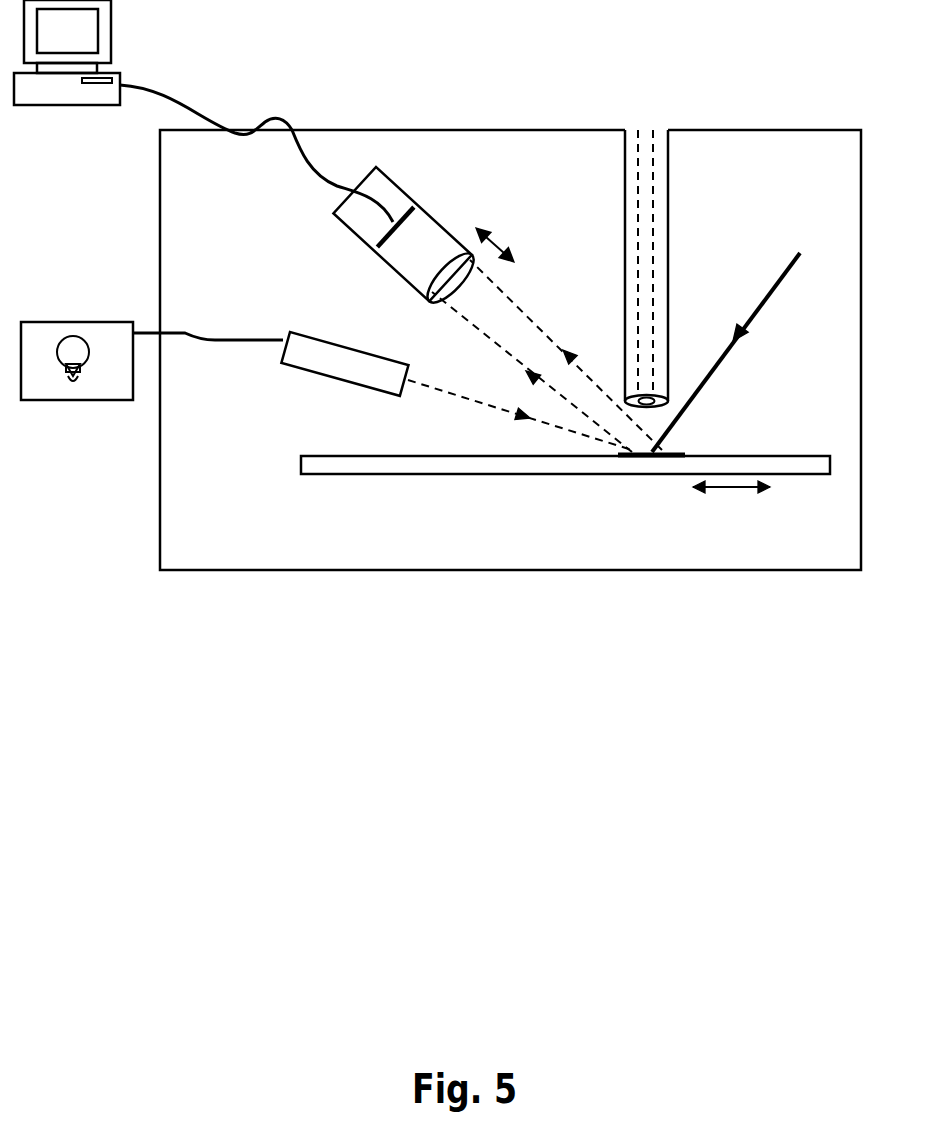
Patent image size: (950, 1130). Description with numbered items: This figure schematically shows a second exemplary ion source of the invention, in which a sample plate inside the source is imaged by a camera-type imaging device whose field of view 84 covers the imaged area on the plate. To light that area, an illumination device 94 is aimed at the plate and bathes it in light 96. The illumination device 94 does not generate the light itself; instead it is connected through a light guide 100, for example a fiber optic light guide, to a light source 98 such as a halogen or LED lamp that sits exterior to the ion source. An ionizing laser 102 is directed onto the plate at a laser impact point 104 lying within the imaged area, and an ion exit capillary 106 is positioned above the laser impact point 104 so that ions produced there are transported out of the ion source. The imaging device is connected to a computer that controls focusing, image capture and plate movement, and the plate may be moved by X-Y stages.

The field of view of the imaging device 84 is at (667, 458).
The illumination device 94 is at (300, 320).
The light 96 is at (483, 403).
The light source 98 is at (40, 400).
The light guide 100 is at (235, 335).
The ionizing laser 102 is at (753, 318).
The laser impact point 104 is at (660, 450).
The ion exit capillary 106 is at (665, 190).